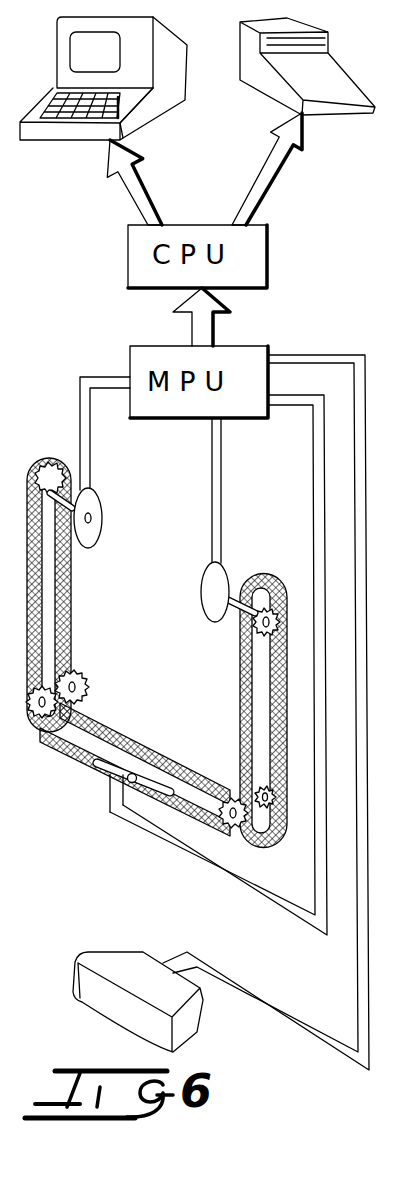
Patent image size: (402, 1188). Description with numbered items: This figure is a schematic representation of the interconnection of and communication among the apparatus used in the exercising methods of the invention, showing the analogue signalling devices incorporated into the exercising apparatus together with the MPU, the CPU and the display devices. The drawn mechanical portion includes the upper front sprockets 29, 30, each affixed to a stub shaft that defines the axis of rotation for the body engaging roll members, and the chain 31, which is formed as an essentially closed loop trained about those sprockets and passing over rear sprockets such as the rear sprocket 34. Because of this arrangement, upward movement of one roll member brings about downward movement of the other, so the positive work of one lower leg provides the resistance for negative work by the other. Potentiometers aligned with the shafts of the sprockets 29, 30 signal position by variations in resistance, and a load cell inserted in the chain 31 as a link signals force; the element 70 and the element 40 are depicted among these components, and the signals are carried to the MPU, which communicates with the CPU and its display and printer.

The sprocket 29 is at (262, 575).
The sprocket 30 is at (44, 458).
The chain 31 is at (77, 733).
The rear sprocket 34 is at (40, 733).
The sensor 40 is at (125, 952).
The carriage 70 is at (118, 774).